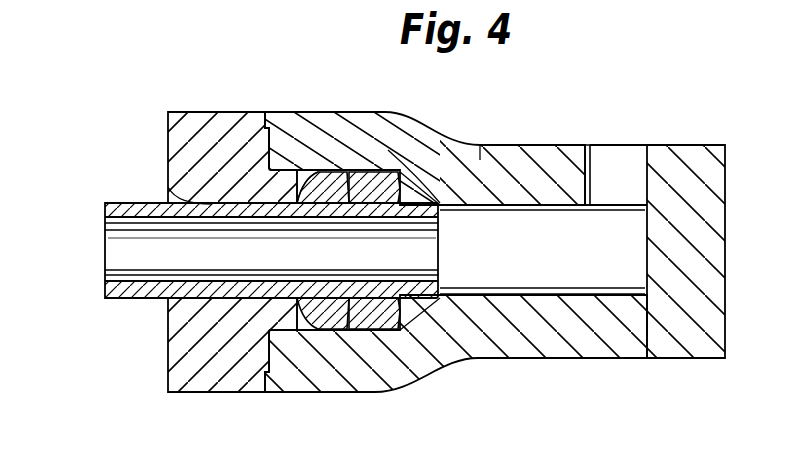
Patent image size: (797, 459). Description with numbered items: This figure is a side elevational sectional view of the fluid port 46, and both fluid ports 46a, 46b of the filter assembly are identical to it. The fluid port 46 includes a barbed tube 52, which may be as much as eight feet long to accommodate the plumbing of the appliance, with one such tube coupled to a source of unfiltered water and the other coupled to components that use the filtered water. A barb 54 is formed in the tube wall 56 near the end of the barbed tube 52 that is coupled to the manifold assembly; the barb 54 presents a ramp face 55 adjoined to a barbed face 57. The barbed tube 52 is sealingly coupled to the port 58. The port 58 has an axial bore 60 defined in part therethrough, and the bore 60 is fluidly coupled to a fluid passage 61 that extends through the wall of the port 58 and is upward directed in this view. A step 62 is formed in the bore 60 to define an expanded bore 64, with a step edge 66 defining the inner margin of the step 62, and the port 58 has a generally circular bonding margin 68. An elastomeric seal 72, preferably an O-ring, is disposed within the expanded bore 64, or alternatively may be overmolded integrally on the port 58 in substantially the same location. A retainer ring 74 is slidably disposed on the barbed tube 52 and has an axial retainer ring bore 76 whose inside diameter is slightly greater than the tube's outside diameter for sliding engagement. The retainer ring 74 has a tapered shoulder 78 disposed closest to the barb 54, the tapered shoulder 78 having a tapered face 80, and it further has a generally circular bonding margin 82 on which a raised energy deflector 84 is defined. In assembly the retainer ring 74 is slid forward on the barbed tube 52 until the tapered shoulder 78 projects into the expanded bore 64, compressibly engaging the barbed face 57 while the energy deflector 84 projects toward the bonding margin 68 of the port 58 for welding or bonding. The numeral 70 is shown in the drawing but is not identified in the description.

The fluid port 46 is at (608, 358).
The fluid port 46a is at (603, 92).
The fluid port 46b is at (615, 105).
The barbed tube 52 is at (117, 205).
The barb 54 is at (355, 335).
The ramp face 55 is at (400, 335).
The tube wall 56 is at (236, 200).
The barbed face 57 is at (318, 174).
The port 58 is at (562, 165).
The axial bore 60 is at (515, 210).
The fluid passage 61 is at (638, 150).
The step 62 is at (445, 160).
The expanded bore 64 is at (352, 172).
The step edge 66 is at (440, 350).
The bonding margin 68 is at (295, 170).
The ferrule flange 70 is at (305, 198).
The elastomeric seal 72 is at (395, 150).
The retainer ring 74 is at (166, 129).
The retainer ring bore 76 is at (168, 300).
The tapered shoulder 78 is at (295, 350).
The tapered face 80 is at (330, 340).
The bonding margin 82 is at (268, 388).
The energy deflector 84 is at (272, 393).